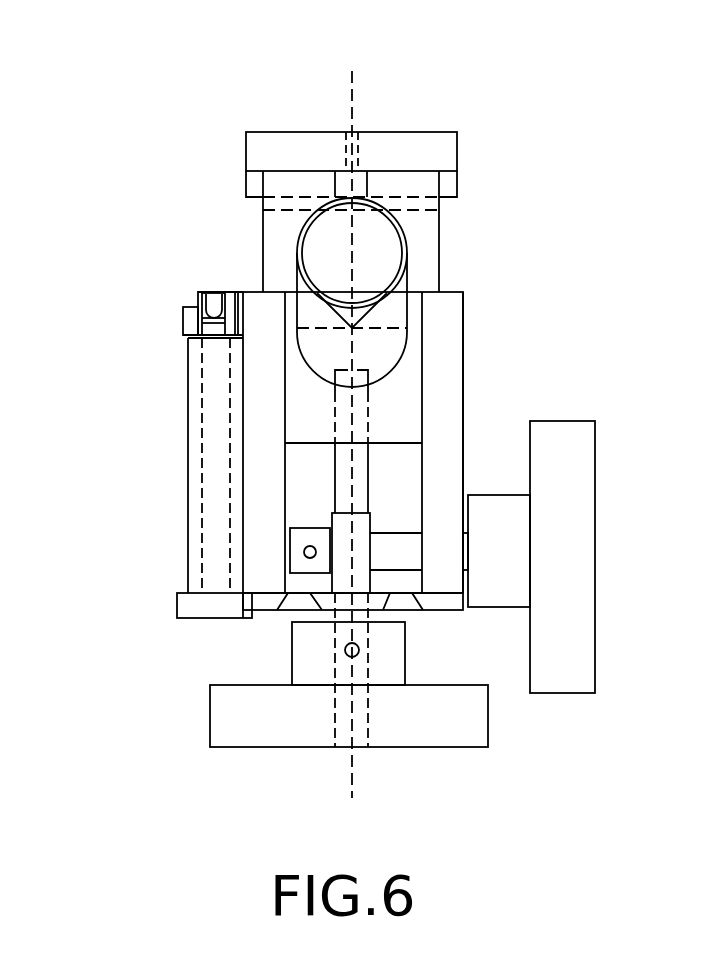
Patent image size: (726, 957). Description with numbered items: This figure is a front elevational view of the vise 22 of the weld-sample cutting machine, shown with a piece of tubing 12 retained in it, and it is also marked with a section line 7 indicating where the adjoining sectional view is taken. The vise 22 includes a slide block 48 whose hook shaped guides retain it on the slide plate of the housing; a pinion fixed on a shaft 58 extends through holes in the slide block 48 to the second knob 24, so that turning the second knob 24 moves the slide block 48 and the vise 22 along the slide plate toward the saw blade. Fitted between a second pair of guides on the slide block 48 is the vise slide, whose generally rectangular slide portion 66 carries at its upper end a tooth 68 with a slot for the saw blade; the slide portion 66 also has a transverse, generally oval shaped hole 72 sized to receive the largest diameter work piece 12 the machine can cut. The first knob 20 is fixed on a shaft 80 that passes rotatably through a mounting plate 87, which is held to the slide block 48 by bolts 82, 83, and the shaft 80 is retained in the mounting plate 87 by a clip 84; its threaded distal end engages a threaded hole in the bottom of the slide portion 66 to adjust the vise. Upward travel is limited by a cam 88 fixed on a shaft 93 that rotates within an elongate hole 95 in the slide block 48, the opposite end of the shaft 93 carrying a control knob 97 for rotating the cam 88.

The section line 7- 7 is at (352, 71).
The piece of tubing 12 is at (317, 202).
The first knob 20 is at (427, 747).
The vise 22 is at (465, 288).
The second knob 24 is at (595, 523).
The slide block 48 is at (465, 342).
The shaft 58 is at (400, 533).
The slide portion 66 is at (262, 245).
The tooth 68 is at (415, 130).
The oval shaped hole 72 is at (233, 320).
The shaft 80 is at (367, 465).
The bolt 82 is at (290, 613).
The bolt 83 is at (417, 613).
The clip 84 is at (333, 587).
The mounting plate 87 is at (253, 617).
The cam 88 is at (195, 307).
The shaft 93 is at (200, 452).
The elongate hole 95 is at (215, 492).
The control knob 97 is at (177, 606).